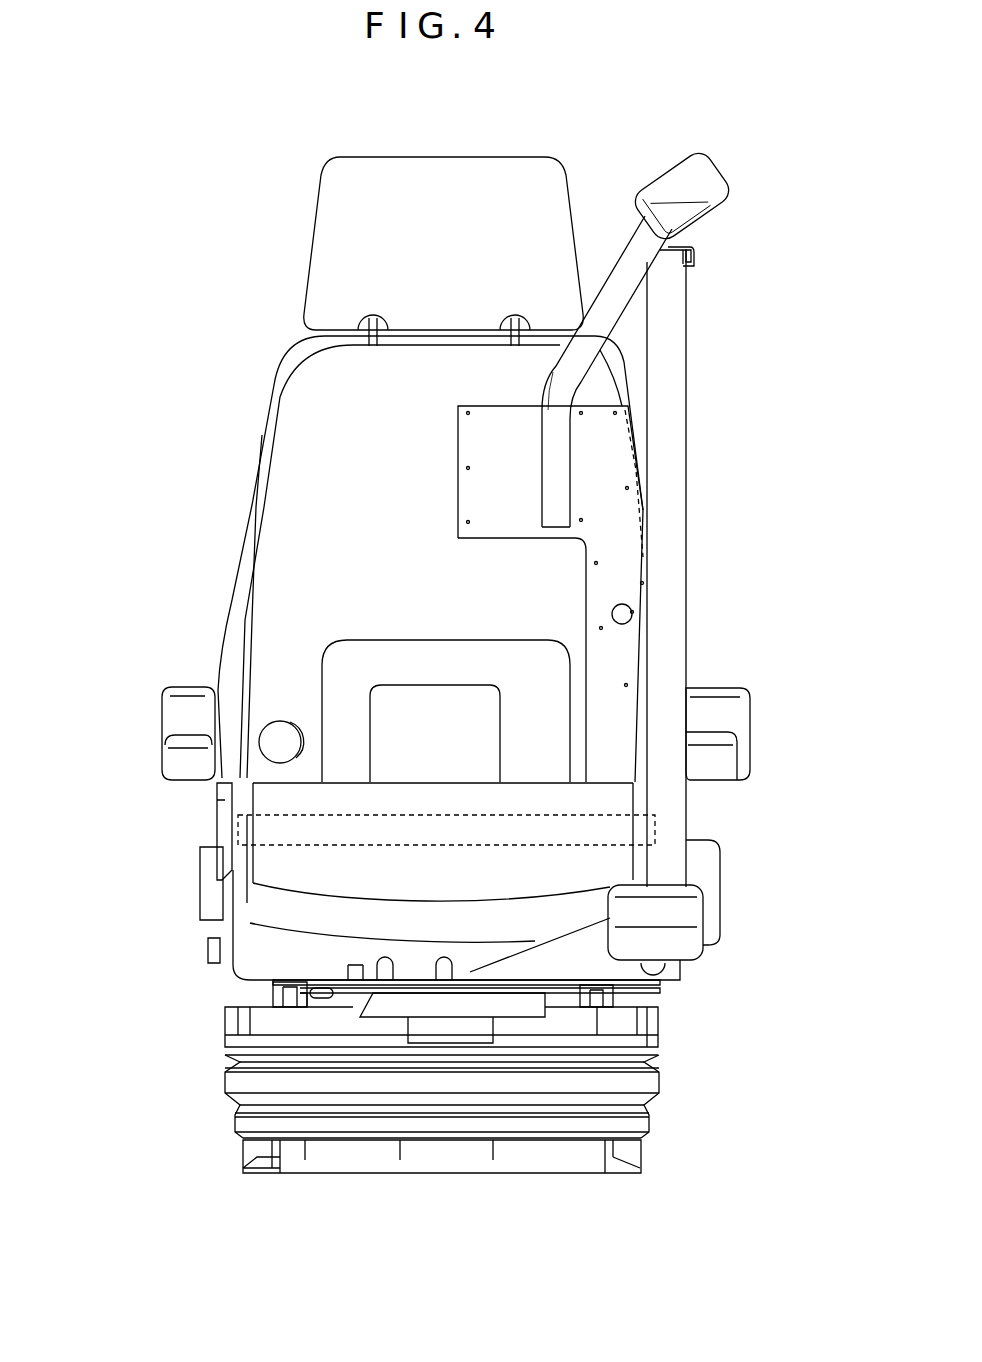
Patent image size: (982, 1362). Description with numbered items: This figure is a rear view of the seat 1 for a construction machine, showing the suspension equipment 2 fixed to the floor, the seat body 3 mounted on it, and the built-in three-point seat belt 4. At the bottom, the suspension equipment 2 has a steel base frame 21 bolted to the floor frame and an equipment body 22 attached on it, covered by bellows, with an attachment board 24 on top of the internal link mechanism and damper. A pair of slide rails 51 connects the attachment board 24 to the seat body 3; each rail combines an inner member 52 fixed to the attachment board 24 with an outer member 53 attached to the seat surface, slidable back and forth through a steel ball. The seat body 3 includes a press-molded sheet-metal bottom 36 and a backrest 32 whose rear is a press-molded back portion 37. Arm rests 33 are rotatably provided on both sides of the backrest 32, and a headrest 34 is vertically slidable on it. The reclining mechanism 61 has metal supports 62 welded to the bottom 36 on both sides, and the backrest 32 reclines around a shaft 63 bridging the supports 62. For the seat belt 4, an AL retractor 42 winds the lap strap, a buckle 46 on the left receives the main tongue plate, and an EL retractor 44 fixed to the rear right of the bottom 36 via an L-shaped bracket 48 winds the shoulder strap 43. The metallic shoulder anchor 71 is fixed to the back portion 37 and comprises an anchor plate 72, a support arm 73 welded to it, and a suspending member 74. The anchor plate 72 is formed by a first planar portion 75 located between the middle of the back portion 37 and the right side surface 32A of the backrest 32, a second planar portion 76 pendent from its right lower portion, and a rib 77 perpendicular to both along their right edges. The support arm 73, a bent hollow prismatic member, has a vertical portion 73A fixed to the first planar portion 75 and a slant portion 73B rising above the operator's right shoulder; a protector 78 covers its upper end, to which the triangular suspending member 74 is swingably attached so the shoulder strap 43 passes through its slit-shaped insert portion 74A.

The seat 1 is at (615, 125).
The suspension equipment 2 is at (492, 1123).
The seat body 3 is at (465, 559).
The three-point seat belt 4 is at (700, 617).
The base frame 21 is at (520, 1165).
The equipment body 22 is at (647, 1133).
The attachment board 24 is at (655, 1030).
The backrest 32 is at (232, 582).
The right side surface of the backrest 32A is at (643, 450).
The arm rests 33 is at (180, 722).
The headrest 34 is at (455, 170).
The bottom 36 is at (250, 985).
The back portion 37 is at (325, 458).
The automatic locking retractor 42 is at (705, 880).
The shoulder strap 43 is at (688, 375).
The emergency locking retractor 44 is at (690, 943).
The buckle 46 is at (210, 883).
The L-shaped bracket 48 is at (622, 975).
The slide rails 51 is at (198, 1047).
The inner member 52 is at (295, 1007).
The outer member 53 is at (283, 1007).
The reclining mechanism 61 is at (189, 819).
The supports 62 is at (228, 803).
The shaft 63 is at (285, 868).
The shoulder anchor 71 is at (618, 236).
The anchor plate 72 is at (458, 432).
The support arm 73 is at (558, 383).
The vertical portion 73A is at (556, 495).
The slant portion 73B is at (597, 330).
The suspending member 74 is at (700, 258).
The insert portion 74A is at (698, 248).
The first planar portion 75 is at (470, 497).
The second planar portion 76 is at (600, 643).
The rib 77 is at (630, 410).
The protector 78 is at (700, 176).